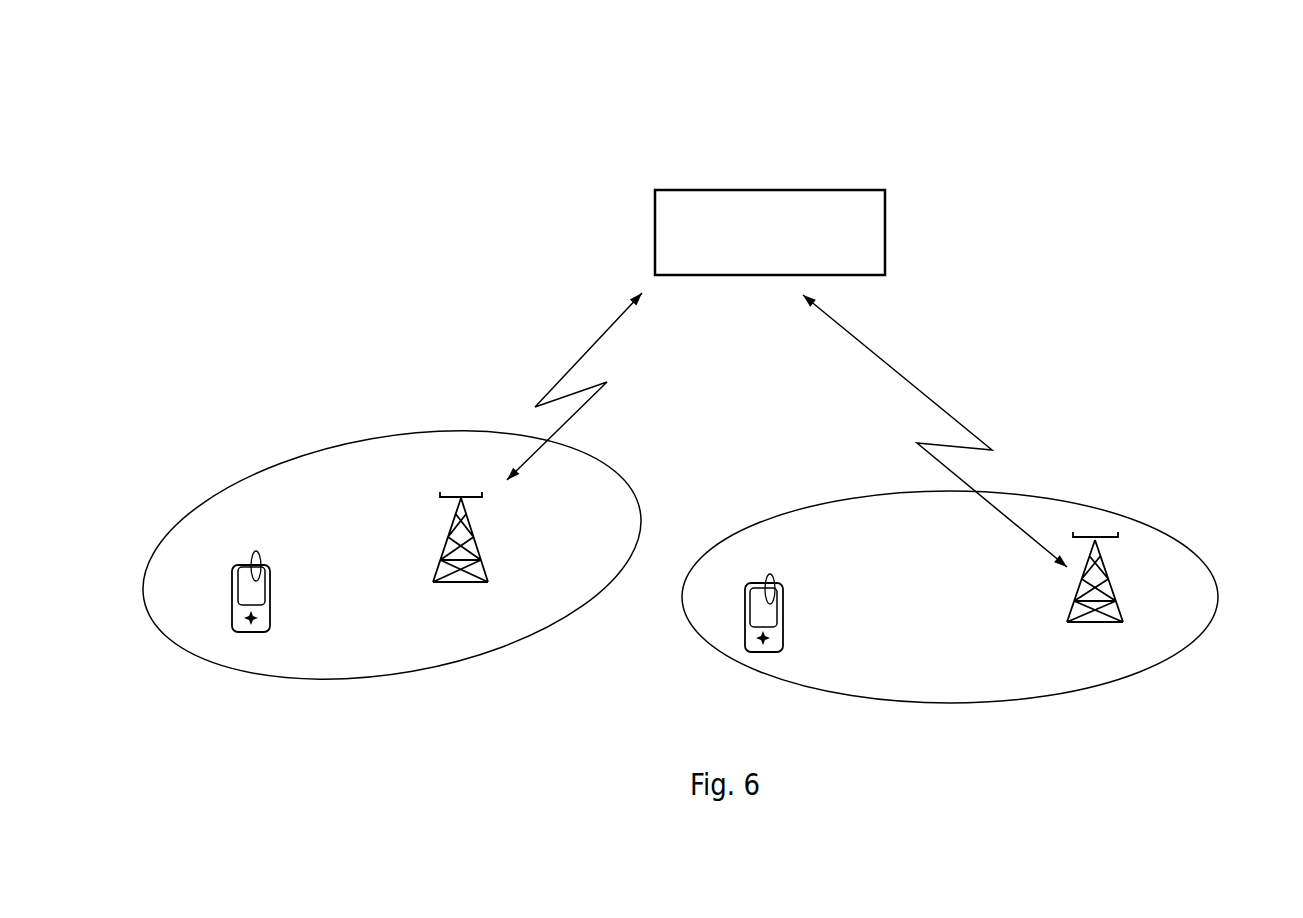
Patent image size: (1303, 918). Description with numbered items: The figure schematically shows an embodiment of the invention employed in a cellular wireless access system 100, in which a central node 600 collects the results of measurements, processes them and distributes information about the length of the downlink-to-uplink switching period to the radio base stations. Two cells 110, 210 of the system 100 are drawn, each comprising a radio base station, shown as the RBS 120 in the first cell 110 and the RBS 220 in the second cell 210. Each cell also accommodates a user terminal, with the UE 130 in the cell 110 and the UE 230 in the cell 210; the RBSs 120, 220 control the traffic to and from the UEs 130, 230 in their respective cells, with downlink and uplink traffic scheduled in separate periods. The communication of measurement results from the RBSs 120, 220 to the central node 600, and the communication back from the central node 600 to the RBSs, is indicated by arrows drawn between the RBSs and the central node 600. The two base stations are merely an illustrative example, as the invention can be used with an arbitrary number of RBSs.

The wireless access system 100 is at (295, 130).
The central node 600 is at (908, 165).
The cell 110 is at (310, 443).
The radio base station 120 is at (427, 495).
The user equipment 130 is at (218, 573).
The cell 210 is at (848, 490).
The radio base station 220 is at (1062, 518).
The user equipment 230 is at (727, 590).